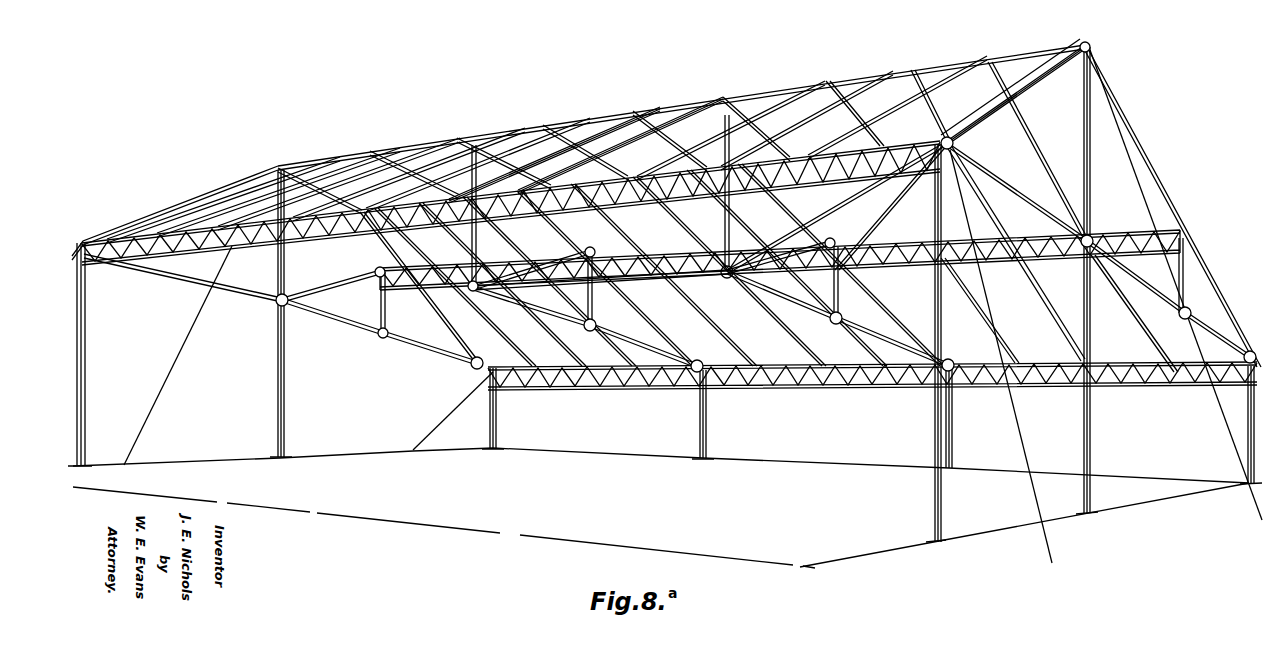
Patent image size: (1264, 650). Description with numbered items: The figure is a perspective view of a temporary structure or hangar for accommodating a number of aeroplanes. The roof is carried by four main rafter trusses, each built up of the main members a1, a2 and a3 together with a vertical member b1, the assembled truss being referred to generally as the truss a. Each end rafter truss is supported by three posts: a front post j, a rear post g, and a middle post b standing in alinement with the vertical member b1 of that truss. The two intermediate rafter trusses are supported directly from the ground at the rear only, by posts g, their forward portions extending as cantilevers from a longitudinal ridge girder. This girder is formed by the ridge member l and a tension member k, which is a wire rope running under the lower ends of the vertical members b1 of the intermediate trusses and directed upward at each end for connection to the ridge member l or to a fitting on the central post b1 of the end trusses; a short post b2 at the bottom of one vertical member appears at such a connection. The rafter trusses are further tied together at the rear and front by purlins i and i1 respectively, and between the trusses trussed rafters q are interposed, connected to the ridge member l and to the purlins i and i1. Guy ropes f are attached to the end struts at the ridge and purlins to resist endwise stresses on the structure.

The main rafter truss member a is at (1021, 263).
The main member of rafter truss a1 is at (1144, 120).
The main member of rafter truss a2 is at (648, 128).
The main member of rafter truss a3 is at (1110, 198).
The middle post b is at (277, 365).
The vertical member of rafter truss b1 is at (1100, 152).
The ball joint post b2 is at (712, 277).
The guy rope f is at (176, 348).
The rear post g is at (498, 407).
The rear purlin i is at (627, 379).
The front purlin i1 is at (780, 200).
The front post j is at (86, 412).
The tension member k is at (370, 250).
The ridge member l is at (828, 80).
The rafter q is at (238, 195).